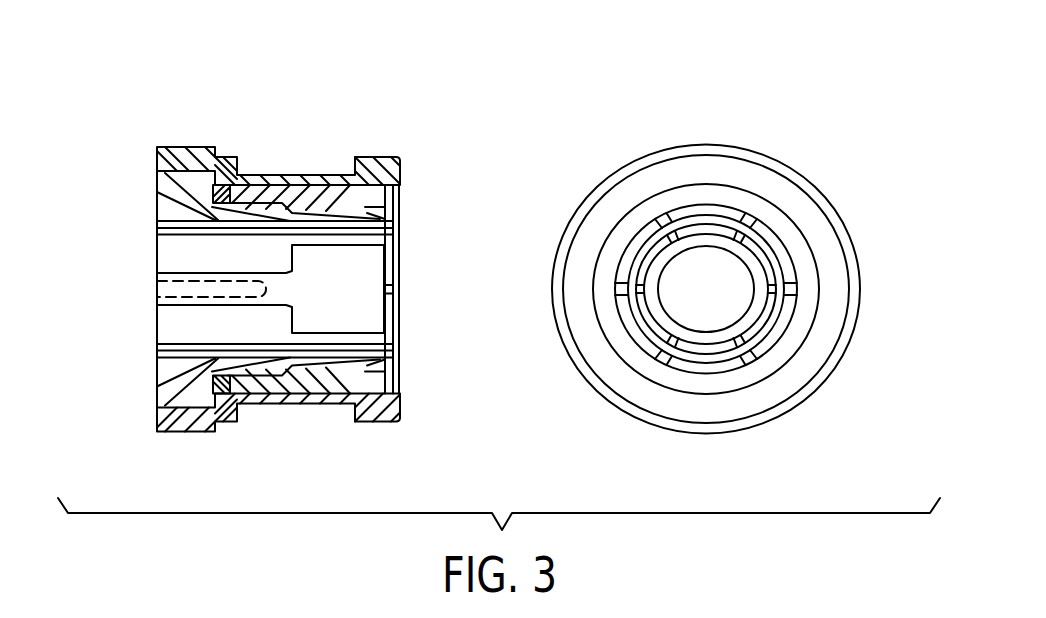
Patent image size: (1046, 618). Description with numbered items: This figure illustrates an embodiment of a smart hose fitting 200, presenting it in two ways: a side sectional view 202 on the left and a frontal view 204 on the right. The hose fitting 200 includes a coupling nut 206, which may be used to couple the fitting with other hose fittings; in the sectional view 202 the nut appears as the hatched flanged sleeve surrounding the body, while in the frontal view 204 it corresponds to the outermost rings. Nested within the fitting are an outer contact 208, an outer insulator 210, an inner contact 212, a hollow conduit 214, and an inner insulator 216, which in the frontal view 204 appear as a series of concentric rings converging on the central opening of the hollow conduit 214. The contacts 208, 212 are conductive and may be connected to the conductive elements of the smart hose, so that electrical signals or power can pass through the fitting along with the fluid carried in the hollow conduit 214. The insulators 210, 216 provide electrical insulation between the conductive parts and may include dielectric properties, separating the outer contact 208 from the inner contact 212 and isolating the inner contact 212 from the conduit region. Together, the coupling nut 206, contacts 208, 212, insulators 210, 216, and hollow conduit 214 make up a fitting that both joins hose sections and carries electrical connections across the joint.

The smart hose fitting 200 is at (578, 66).
The side sectional view 202 is at (179, 106).
The frontal view 204 is at (751, 105).
The coupling nut 206 is at (380, 168).
The outer contact 208 is at (672, 214).
The outer insulator 210 is at (655, 248).
The inner contact 212 is at (638, 303).
The hollow conduit 214 is at (680, 297).
The inner insulator 216 is at (358, 340).